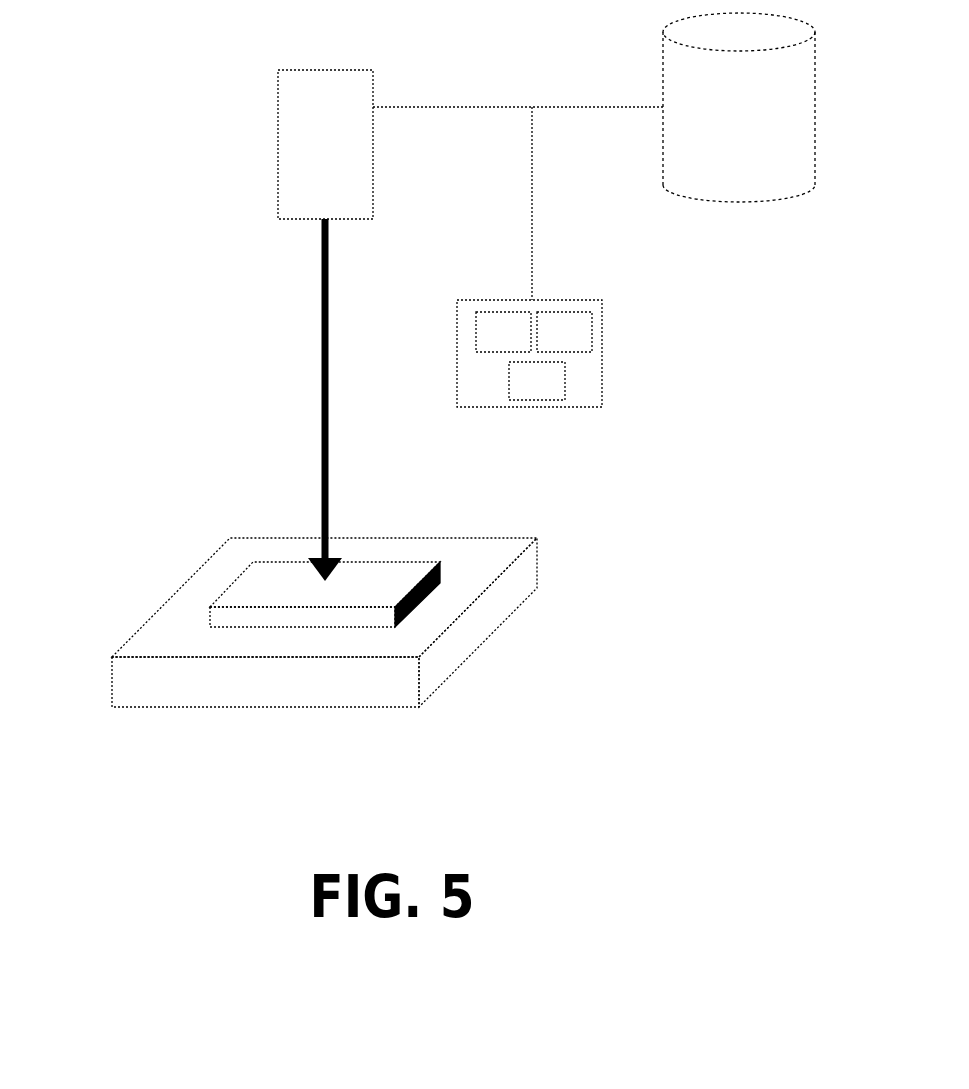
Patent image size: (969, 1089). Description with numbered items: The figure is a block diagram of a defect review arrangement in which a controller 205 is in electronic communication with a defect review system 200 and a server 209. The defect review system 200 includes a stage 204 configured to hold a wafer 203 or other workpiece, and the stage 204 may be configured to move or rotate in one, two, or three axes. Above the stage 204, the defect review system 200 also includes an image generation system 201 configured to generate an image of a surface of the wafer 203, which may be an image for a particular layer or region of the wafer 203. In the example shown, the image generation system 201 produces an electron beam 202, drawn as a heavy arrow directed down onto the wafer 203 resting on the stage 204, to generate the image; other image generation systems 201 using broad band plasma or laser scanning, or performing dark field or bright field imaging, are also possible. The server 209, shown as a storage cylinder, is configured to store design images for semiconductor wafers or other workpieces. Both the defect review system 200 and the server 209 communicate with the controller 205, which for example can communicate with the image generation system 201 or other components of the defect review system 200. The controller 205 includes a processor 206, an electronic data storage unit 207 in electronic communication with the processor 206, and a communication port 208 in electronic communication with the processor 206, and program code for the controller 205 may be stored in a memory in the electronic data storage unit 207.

The defect review system 200 is at (218, 102).
The image generation system 201 is at (325, 144).
The electron beam 202 is at (329, 278).
The wafer 203 is at (250, 587).
The stage 204 is at (179, 702).
The controller 205 is at (558, 312).
The processor 206 is at (503, 332).
The electronic data storage unit 207 is at (564, 332).
The communication port 208 is at (537, 381).
The server 209 is at (739, 107).